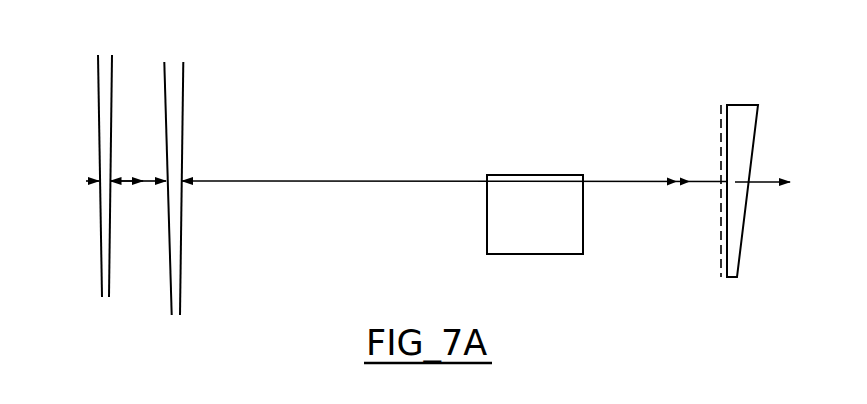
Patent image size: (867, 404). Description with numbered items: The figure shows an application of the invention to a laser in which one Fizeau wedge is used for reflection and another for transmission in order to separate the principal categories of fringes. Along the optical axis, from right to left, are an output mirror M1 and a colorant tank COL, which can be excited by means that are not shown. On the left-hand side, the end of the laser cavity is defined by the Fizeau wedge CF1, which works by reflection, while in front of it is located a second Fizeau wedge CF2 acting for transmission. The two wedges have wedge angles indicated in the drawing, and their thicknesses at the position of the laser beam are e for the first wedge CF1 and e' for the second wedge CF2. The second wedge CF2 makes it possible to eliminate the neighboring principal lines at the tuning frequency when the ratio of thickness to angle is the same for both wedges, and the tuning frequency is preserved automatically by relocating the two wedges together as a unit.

The Fizeau wedge CF1 is at (104, 107).
The second Fizeau wedge CF2 is at (171, 80).
The thickness of the first wedge e is at (87, 198).
The thickness of the second wedge e' is at (154, 205).
The colorant tank COL is at (535, 214).
The output mirror M1 is at (745, 133).